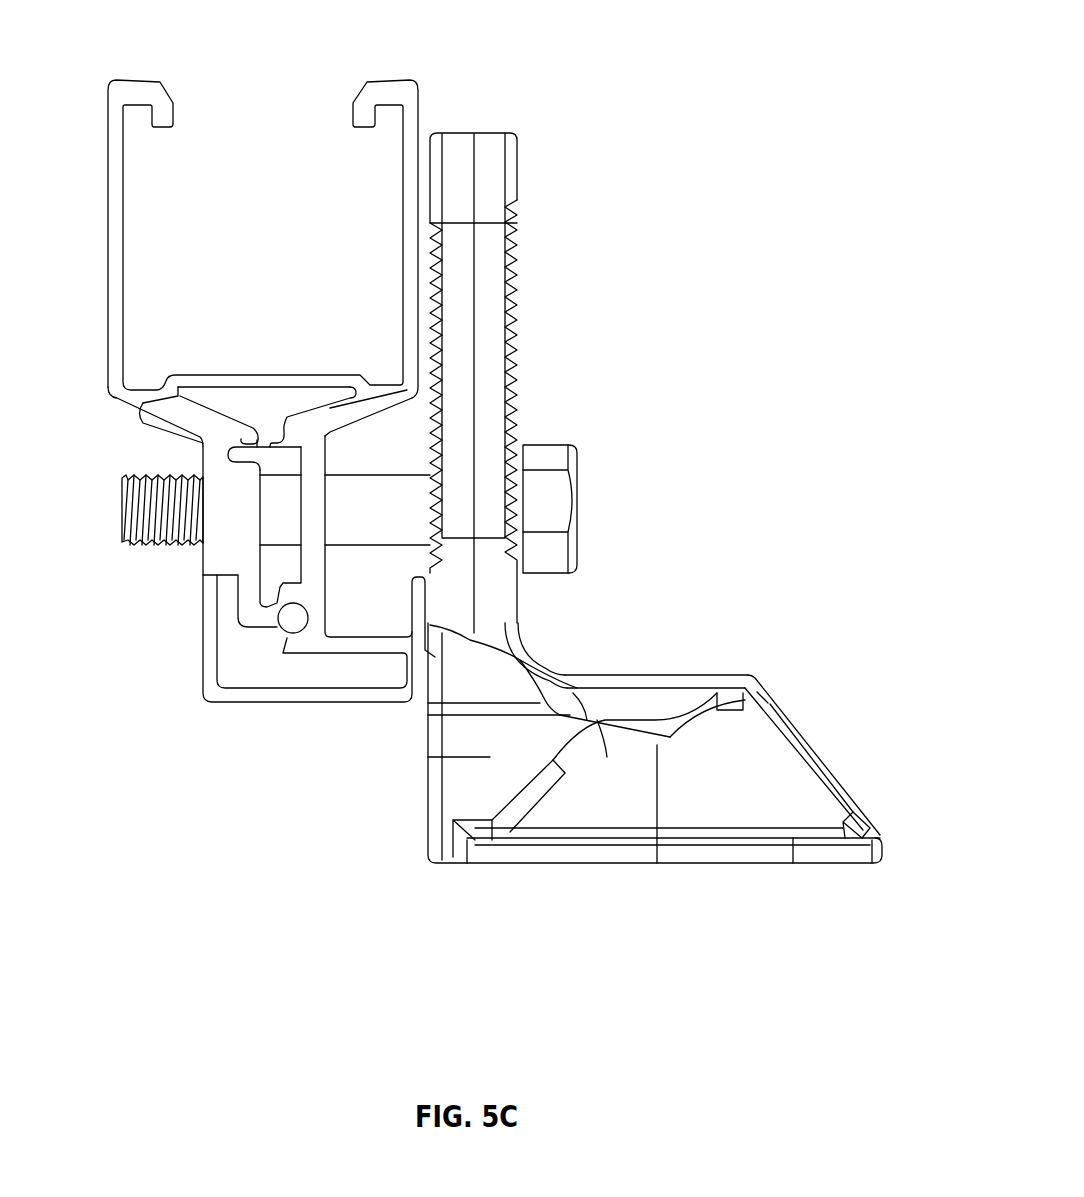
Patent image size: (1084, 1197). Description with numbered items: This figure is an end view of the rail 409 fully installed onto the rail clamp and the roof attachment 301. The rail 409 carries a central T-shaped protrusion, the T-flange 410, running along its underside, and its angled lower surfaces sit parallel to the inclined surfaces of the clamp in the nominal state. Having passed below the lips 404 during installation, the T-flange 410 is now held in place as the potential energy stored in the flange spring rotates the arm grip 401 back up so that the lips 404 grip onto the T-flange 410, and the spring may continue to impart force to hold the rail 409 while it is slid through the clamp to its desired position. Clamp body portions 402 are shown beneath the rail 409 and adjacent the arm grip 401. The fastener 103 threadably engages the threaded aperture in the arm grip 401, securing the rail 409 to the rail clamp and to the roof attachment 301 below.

The rail 409 is at (406, 78).
The lips 404 is at (280, 432).
The T-flange 410 is at (262, 452).
The arm grip 401 is at (228, 553).
The clamp jaw 402 is at (420, 600).
The fastener 103 is at (555, 500).
The roof attachment 301 is at (827, 757).